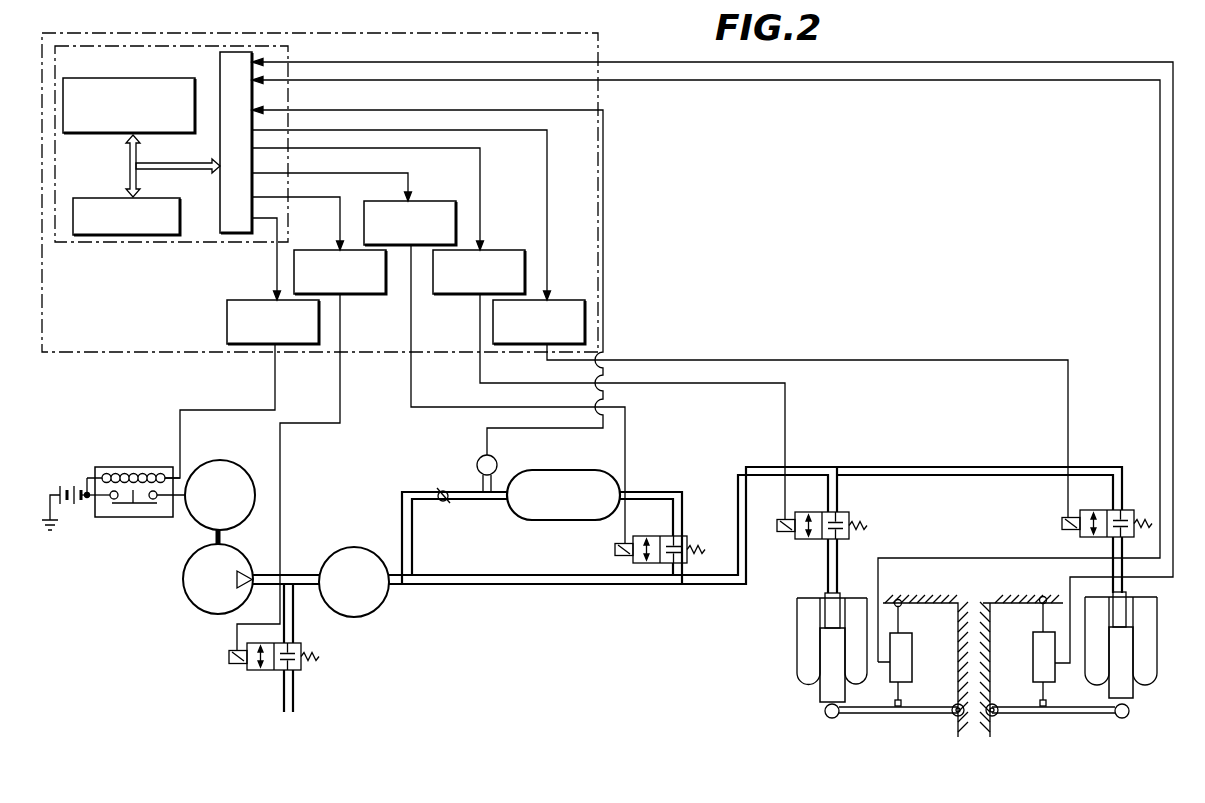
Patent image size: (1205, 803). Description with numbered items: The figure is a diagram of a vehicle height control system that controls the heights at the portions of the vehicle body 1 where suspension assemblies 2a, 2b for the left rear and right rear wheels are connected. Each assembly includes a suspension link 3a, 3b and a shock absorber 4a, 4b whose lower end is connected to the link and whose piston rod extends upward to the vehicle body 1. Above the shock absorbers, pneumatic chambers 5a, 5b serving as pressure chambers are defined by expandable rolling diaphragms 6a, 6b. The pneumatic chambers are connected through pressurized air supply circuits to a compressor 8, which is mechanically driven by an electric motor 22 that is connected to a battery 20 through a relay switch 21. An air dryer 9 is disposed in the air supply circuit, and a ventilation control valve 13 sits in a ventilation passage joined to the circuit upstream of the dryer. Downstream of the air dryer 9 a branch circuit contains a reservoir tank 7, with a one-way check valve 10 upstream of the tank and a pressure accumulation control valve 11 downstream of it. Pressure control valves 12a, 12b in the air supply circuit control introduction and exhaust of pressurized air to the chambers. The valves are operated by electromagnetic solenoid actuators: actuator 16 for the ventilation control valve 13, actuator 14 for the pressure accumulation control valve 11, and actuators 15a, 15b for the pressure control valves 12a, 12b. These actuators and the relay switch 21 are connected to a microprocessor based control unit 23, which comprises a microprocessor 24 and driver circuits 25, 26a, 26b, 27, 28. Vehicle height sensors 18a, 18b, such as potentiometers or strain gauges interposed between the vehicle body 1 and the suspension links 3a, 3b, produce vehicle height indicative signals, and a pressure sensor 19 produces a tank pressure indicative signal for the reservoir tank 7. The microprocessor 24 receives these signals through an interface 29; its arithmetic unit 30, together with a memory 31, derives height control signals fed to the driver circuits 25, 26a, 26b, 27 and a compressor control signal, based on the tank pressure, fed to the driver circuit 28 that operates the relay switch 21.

The vehicle body 1 is at (920, 600).
The suspension assembly 2a is at (854, 671).
The suspension assembly 2b is at (1091, 670).
The suspension link 3a is at (886, 714).
The suspension link 3b is at (1074, 714).
The shock absorber 4a is at (830, 682).
The shock absorber 4b is at (1130, 684).
The pneumatic chamber 5a is at (800, 622).
The pneumatic chamber 5b is at (1150, 612).
The rolling diaphragm 6a is at (797, 655).
The rolling diaphragm 6b is at (1157, 655).
The reservoir tank 7 is at (600, 470).
The compressor 8 is at (190, 606).
The air dryer 9 is at (370, 548).
The one-way check valve 10 is at (443, 502).
The pressure accumulation control valve 11 is at (690, 535).
The pressure control valve 12a is at (846, 513).
The pressure control valve 12b is at (1133, 510).
The ventilation control valve 13 is at (303, 645).
The actuator 14 is at (615, 550).
The actuator 15a is at (783, 532).
The actuator 15b is at (1062, 524).
The actuator 16 is at (229, 661).
The vehicle height sensor 18a is at (905, 650).
The vehicle height sensor 18b is at (1040, 648).
The pressure sensor 19 is at (496, 460).
The battery 20 is at (66, 480).
The relay switch 21 is at (125, 517).
The electric motor 22 is at (246, 461).
The control unit 23 is at (406, 33).
The microprocessor 24 is at (283, 46).
The driver circuit 25 is at (428, 201).
The driver circuit 26a is at (502, 250).
The driver circuit 26b is at (562, 300).
The driver circuit 27 is at (325, 250).
The driver circuit 28 is at (253, 300).
The interface 29 is at (218, 92).
The arithmetic unit 30 is at (127, 77).
The memory 31 is at (107, 198).